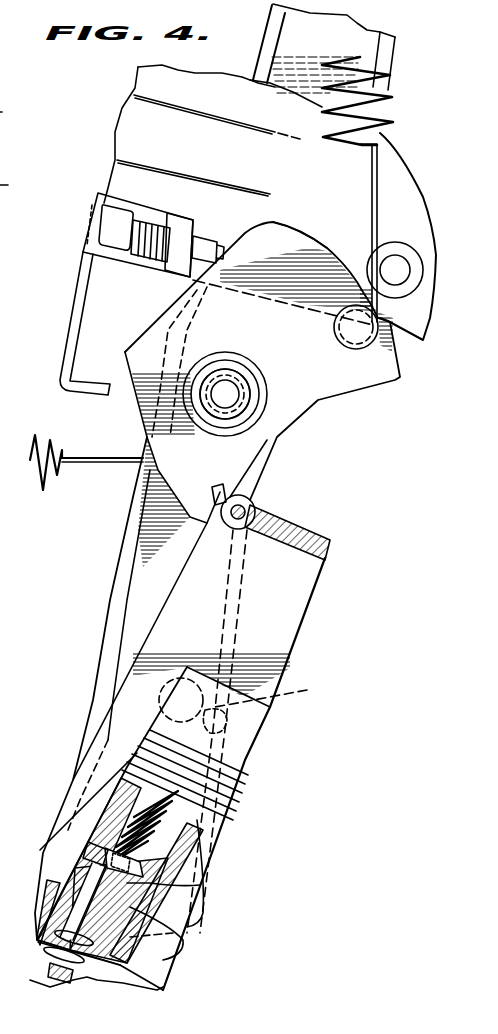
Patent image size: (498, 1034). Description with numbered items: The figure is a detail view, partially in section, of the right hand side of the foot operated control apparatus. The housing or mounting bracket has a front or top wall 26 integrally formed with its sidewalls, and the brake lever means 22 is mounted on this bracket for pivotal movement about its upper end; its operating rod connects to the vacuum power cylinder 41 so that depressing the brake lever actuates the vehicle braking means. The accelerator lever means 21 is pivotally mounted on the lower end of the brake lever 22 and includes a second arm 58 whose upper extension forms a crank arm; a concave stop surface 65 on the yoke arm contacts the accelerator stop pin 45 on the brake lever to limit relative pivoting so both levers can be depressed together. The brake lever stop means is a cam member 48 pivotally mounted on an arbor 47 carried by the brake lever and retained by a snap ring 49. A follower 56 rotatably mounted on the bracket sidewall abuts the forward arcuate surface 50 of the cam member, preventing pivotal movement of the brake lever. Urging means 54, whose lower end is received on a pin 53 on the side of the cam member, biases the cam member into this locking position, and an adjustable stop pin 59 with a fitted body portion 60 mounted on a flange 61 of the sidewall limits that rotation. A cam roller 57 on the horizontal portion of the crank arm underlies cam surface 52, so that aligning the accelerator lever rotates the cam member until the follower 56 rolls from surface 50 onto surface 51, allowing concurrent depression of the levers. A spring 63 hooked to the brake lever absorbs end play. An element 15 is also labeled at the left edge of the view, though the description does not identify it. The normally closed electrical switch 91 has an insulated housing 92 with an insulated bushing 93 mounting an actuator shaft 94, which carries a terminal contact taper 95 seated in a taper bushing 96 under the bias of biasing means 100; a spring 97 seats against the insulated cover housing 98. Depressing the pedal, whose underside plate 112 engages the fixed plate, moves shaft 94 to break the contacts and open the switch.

The frame 15 is at (10, 115).
The accelerator lever means 21 is at (47, 867).
The brake lever means 22 is at (107, 611).
The front or top wall 26 is at (136, 86).
The vacuum power cylinder 41 is at (17, 186).
The accelerator stop pin 45 is at (157, 700).
The arbor 47 is at (240, 388).
The cam member 48 is at (350, 412).
The snap ring 49 is at (212, 425).
The forward arcuate surface 50 is at (333, 250).
The cam surface 51 is at (157, 322).
The cam surface 52 is at (200, 540).
The pin 53 is at (380, 350).
The urging means 54 is at (398, 100).
The cam follower 56 is at (393, 253).
The cam roller 57 is at (252, 507).
The second arm 58 is at (333, 546).
The adjustable stop pin 59 is at (215, 268).
The fitted body portion 60 is at (196, 230).
The flange 61 is at (96, 210).
The spring 63 is at (42, 488).
The concave portion of stop surface 65 is at (266, 706).
The normally closed electrical switch 91 is at (74, 838).
The insulated housing 92 is at (130, 937).
The insulated bushing 93 is at (140, 980).
The actuator shaft 94 is at (47, 972).
The terminal contact taper 95 is at (140, 890).
The taper bushing 96 is at (147, 917).
The spring 97 is at (143, 867).
The insulated cover housing 98 is at (190, 797).
The biasing means 100 is at (88, 972).
The plate 112 is at (30, 912).